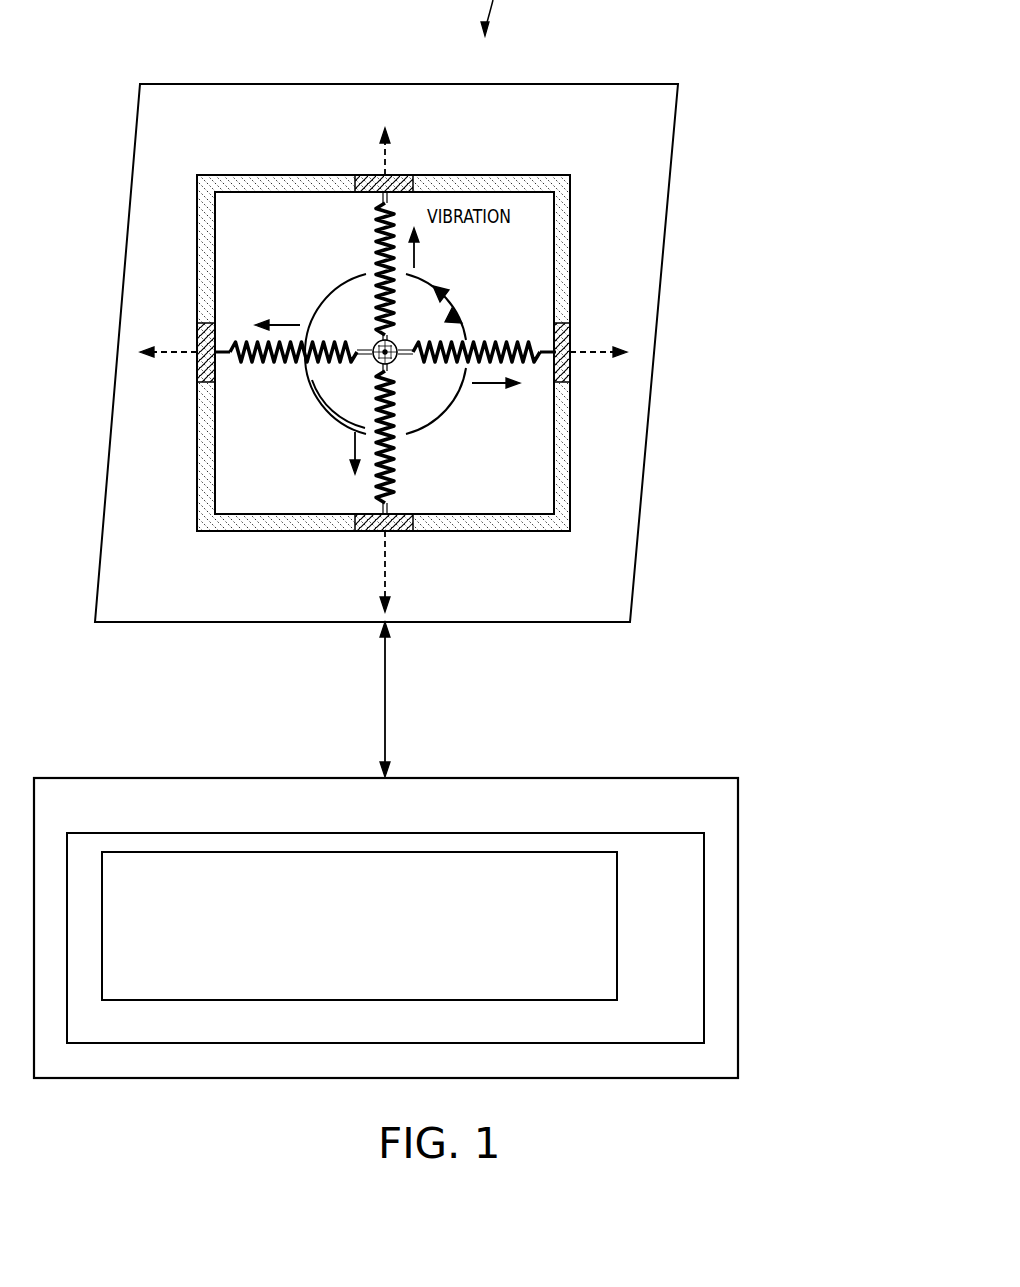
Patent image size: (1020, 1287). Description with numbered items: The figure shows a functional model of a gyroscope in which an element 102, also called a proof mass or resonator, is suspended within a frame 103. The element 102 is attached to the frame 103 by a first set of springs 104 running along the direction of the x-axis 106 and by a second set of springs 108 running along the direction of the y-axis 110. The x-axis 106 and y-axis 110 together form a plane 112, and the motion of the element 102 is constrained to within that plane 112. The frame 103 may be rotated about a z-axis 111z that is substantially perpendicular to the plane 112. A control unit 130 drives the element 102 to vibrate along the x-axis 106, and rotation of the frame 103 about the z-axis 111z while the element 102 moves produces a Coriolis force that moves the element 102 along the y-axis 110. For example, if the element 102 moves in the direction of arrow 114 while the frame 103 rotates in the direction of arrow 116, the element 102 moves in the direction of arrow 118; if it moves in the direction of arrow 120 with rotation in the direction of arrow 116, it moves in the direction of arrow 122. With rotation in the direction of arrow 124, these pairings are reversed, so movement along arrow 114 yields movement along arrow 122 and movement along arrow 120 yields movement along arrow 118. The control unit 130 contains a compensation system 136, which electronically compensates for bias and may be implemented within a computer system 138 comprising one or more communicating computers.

The element 102 is at (375, 355).
The frame 103 is at (424, 175).
The first set of springs 104 is at (253, 366).
The x-axis 106 is at (588, 362).
The second set of springs 108 is at (378, 247).
The y-axis 110 is at (384, 152).
The z-axis 111z is at (393, 345).
The plane 112 is at (537, 76).
The arrow 114 is at (487, 386).
The arrow 116 is at (426, 432).
The arrow 118 is at (352, 452).
The arrow 120 is at (280, 324).
The arrow 122 is at (416, 261).
The arrow 124 is at (327, 312).
The control unit 130 is at (738, 1038).
The compensation system 136 is at (704, 938).
The computer system 138 is at (617, 923).